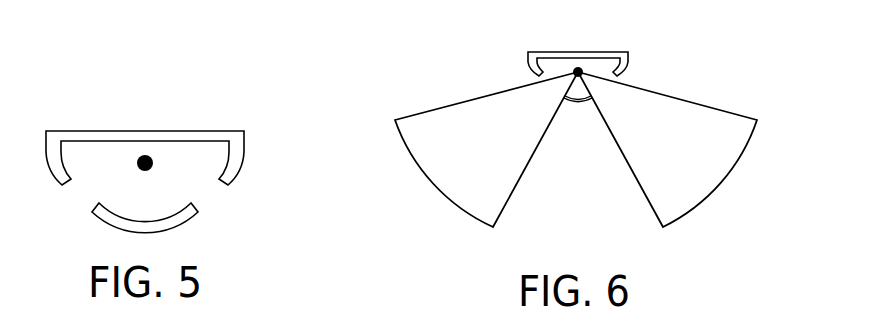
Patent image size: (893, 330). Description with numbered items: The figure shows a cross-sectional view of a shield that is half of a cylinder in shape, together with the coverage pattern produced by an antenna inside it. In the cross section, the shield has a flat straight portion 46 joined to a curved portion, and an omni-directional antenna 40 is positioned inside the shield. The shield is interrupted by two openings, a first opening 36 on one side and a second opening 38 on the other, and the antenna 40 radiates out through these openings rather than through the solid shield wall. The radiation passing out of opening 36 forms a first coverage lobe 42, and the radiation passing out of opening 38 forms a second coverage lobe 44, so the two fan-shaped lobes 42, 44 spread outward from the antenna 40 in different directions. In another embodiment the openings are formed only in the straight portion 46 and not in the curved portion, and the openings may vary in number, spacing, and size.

In FIG. 5, the opening 36 is at (75, 202).
In FIG. 5, the opening 38 is at (214, 201).
In FIG. 5, the omni-directional antenna 40 is at (151, 159).
In FIG. 6, the coverage lobe 42 is at (448, 203).
In FIG. 6, the coverage lobe 44 is at (704, 203).
In FIG. 5, the straight portion 46 is at (107, 131).